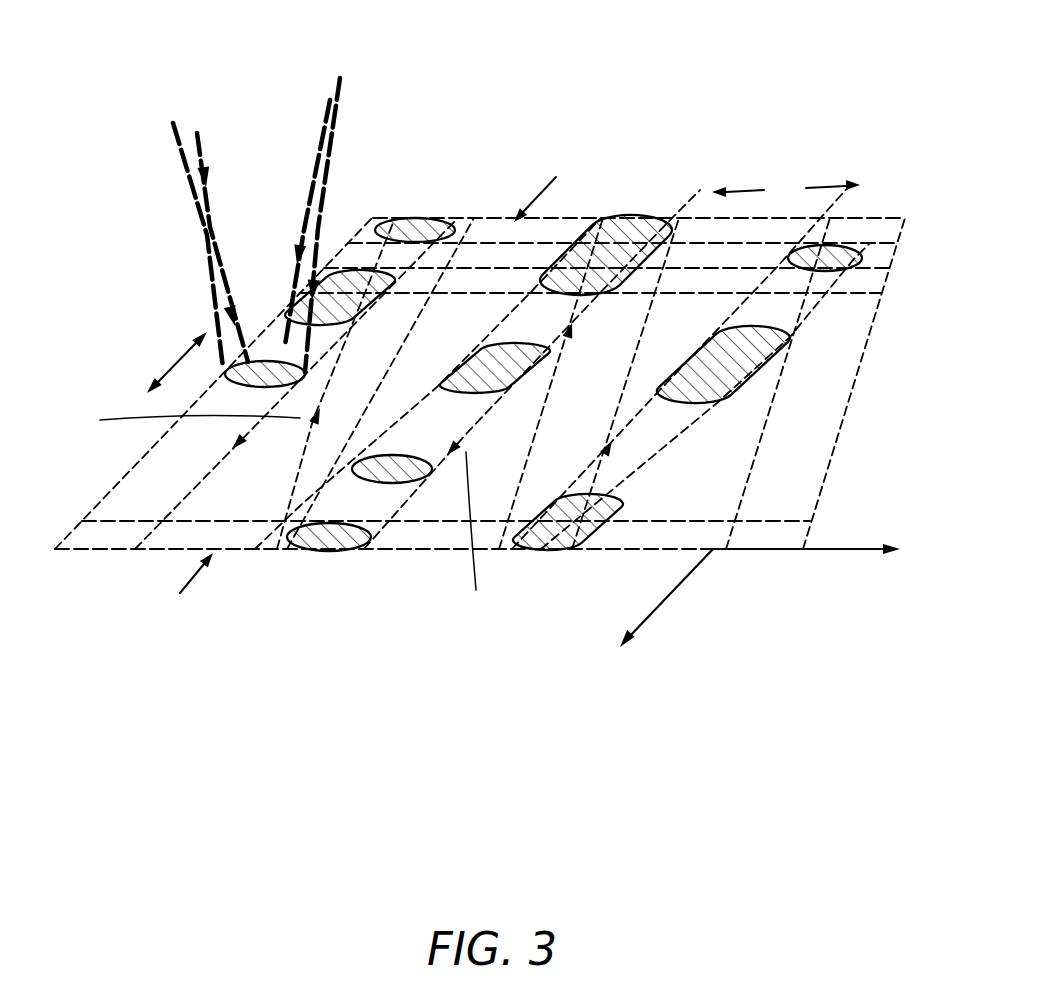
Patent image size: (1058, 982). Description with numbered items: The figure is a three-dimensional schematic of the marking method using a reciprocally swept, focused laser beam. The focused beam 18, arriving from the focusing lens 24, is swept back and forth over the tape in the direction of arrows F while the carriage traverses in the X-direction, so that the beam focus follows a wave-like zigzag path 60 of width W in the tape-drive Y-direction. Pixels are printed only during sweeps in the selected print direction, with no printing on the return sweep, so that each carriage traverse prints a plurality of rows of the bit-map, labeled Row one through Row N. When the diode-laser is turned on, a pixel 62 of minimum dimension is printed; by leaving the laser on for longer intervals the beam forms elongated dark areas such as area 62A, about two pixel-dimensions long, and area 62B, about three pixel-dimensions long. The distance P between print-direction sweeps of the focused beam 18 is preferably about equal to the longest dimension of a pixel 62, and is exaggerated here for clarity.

The focused beam 18 is at (163, 231).
The focusing lens 24 is at (236, 58).
The zigzag path 60 is at (383, 722).
The pixel 62 is at (408, 225).
The area about two pixel-dimensions long 62A is at (349, 292).
The area about three pixel-dimensions long 62B is at (643, 226).